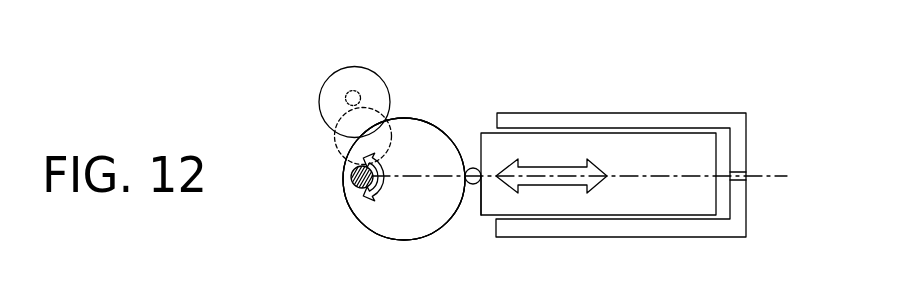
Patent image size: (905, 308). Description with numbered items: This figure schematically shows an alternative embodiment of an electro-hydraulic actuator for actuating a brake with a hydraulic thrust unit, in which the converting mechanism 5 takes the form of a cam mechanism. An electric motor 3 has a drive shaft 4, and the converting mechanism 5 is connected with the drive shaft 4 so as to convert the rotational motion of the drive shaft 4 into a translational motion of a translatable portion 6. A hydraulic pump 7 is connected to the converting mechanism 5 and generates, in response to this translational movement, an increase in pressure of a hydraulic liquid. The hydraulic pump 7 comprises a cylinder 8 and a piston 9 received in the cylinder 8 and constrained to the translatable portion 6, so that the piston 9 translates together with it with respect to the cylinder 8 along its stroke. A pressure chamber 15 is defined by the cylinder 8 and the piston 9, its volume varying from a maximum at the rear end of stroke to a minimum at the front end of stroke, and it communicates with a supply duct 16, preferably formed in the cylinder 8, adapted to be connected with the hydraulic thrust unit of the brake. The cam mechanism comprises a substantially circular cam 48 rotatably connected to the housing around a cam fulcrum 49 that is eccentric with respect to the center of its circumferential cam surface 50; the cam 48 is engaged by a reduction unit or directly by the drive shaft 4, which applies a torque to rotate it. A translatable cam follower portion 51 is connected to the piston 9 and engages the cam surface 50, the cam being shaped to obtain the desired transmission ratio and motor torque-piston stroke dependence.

The electric motor 3 is at (382, 92).
The drive shaft 4 is at (353, 93).
The converting mechanism 5 is at (432, 110).
The translatable portion 6 is at (471, 167).
The hydraulic pump 7 is at (544, 98).
The cylinder 8 is at (597, 124).
The piston 9 is at (660, 152).
The pressure chamber 15 is at (722, 155).
The supply duct 16 is at (747, 178).
The cam 48 is at (406, 222).
The cam fulcrum 49 is at (352, 177).
The circumferential cam surface 50 is at (435, 232).
The translatable cam follower portion 51 is at (479, 182).